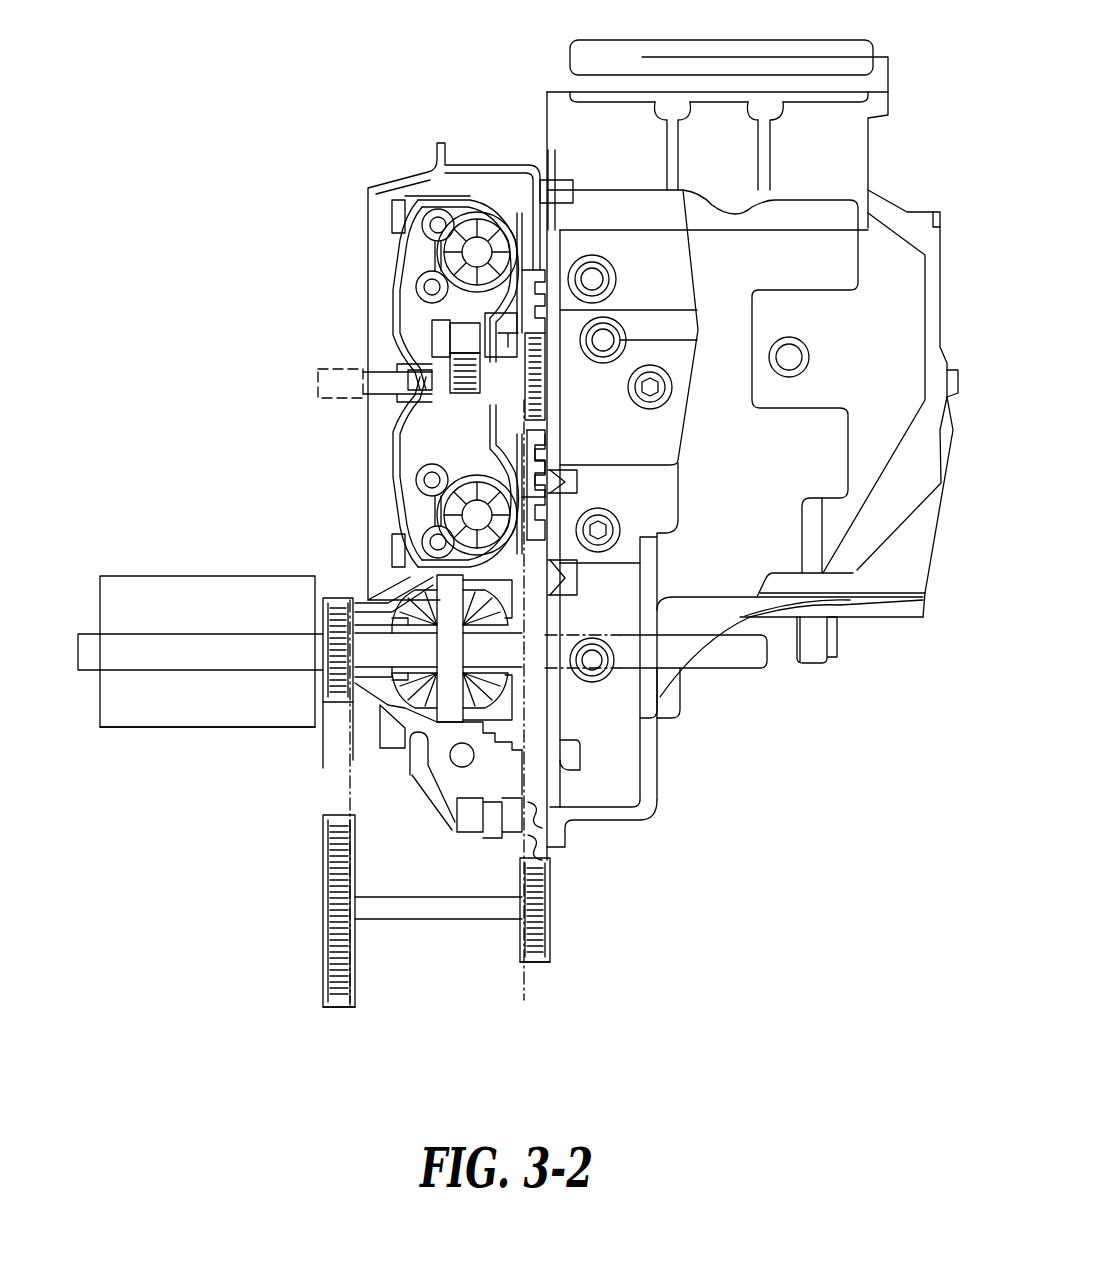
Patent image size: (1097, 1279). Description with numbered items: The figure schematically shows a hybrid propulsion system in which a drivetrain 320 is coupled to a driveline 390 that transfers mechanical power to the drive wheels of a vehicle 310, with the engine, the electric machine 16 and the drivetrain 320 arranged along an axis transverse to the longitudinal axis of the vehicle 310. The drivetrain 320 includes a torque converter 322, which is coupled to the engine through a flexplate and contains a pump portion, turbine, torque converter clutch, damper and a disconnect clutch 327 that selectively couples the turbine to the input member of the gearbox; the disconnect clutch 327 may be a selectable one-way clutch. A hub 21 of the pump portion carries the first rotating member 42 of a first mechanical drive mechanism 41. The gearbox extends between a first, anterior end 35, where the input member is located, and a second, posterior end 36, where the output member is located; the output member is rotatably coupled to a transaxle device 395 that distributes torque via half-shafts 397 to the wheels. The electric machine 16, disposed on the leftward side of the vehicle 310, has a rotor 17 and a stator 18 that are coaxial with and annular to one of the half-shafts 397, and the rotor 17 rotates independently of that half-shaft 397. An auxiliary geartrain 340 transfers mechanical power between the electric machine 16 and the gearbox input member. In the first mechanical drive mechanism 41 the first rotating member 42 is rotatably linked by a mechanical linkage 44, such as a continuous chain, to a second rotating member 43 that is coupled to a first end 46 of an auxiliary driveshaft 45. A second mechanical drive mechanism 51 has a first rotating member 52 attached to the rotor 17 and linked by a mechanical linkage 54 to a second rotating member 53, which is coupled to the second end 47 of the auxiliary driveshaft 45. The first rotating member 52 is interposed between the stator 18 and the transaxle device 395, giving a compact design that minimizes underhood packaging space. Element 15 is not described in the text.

The vehicle 310 is at (263, 135).
The drivetrain 320 is at (348, 303).
The torque converter 322 is at (429, 197).
The disconnect clutch 327 is at (486, 320).
The hub 21 is at (512, 310).
The first rotating member 42 is at (540, 332).
The input shaft 15 is at (330, 369).
The electric machine 16 is at (125, 575).
The half-shafts 397 is at (58, 636).
The stator 18 is at (120, 727).
The rotor 17 is at (322, 690).
The first rotating member 52 is at (340, 703).
The mechanical linkage 54 is at (327, 768).
The driveline 390 is at (348, 590).
The transaxle device 395 is at (378, 752).
The first mechanical drive mechanism 41 is at (517, 745).
The mechanical linkage 44 is at (522, 840).
The second mechanical drive mechanism 51 is at (318, 848).
The second rotating member 53 is at (325, 932).
The second end 47 is at (325, 1006).
The auxiliary driveshaft 45 is at (428, 920).
The auxiliary geartrain 340 is at (497, 955).
The second rotating member 43 is at (551, 930).
The first end 46 is at (553, 962).
The first, anterior end 35 is at (568, 858).
The second, posterior end 36 is at (668, 765).